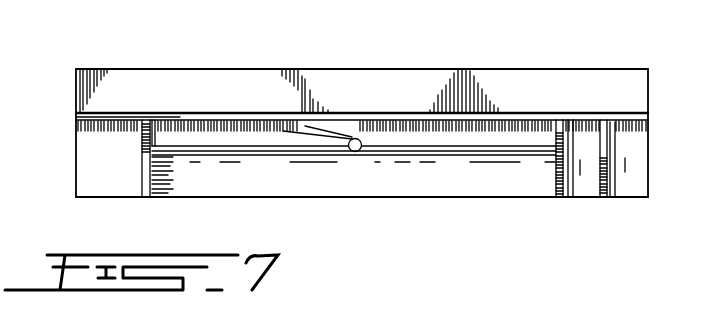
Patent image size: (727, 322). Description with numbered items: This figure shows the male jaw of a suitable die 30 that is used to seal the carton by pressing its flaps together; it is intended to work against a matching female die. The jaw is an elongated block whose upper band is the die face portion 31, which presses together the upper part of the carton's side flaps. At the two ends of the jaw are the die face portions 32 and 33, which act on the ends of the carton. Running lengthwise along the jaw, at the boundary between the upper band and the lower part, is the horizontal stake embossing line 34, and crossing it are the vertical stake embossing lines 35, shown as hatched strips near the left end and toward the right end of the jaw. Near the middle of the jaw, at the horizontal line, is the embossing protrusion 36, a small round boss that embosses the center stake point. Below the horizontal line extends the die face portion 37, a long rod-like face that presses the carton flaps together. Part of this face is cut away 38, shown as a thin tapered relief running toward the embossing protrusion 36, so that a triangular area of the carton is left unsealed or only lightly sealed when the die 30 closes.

The die 30 is at (605, 62).
The die face portion 31 is at (447, 78).
The die face portion 32 is at (103, 178).
The die face portion 33 is at (642, 157).
The horizontal stake embossing line 34 is at (622, 110).
The vertical stake embossing lines 35 is at (155, 180).
The embossing protrusion 36 is at (358, 150).
The die face portion 37 is at (253, 147).
The cut away 38 is at (342, 125).